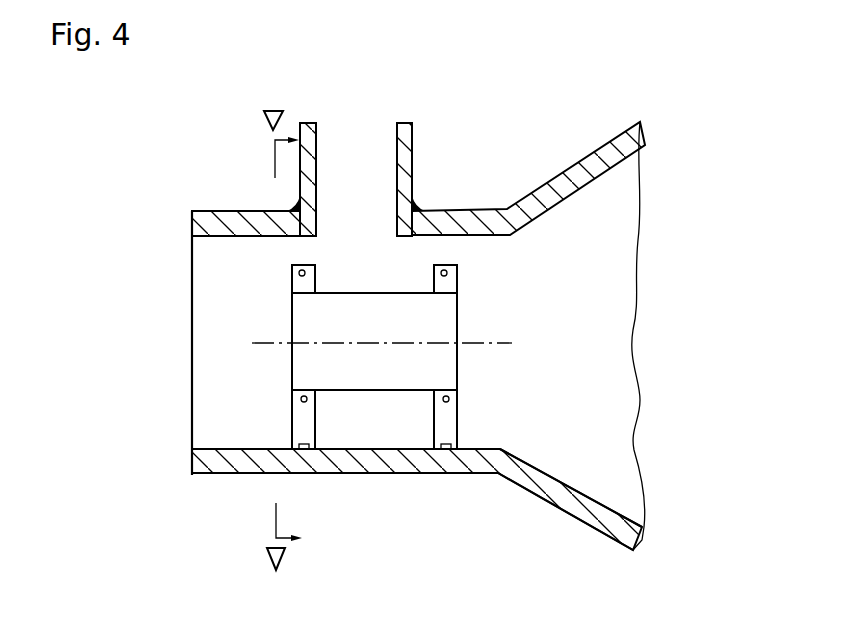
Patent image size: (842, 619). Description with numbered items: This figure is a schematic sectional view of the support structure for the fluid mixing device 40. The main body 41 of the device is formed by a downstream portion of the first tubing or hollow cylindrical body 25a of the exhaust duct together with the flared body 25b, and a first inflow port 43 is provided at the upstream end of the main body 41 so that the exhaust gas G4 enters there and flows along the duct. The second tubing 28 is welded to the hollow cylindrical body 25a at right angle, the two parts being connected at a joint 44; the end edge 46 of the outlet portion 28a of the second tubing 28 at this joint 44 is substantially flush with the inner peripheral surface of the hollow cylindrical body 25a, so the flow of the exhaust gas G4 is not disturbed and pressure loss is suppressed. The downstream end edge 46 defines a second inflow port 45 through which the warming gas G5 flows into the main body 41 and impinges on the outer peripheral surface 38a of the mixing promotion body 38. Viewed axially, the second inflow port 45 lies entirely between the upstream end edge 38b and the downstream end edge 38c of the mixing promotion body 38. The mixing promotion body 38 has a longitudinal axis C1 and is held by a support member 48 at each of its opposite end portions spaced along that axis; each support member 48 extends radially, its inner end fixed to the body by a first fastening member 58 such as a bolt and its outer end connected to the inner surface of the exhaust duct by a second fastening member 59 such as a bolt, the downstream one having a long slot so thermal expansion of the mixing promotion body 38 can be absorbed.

The fluid mixing device 40 is at (152, 277).
The first inflow port 43 is at (192, 397).
The second tubing 28 is at (388, 157).
The outlet portion 28a is at (413, 198).
The downstream end edge 46 is at (305, 237).
The joint 44 is at (417, 213).
The second inflow port 45 is at (383, 226).
The first tubing (hollow cylindrical body) 25a is at (218, 474).
The flared body 25b is at (547, 506).
The main body 41 is at (428, 474).
The mixing promotion body 38 is at (371, 320).
The outer peripheral surface 38a is at (362, 306).
The upstream end edge 38b is at (292, 357).
The downstream end edge 38c is at (458, 319).
The second fastening member 59 is at (303, 266).
The first fastening member 58 is at (301, 399).
The support member 48 is at (437, 432).
The longitudinal axis C1 is at (258, 342).
The exhaust gas G4 is at (172, 343).
The warming gas G5 is at (355, 168).